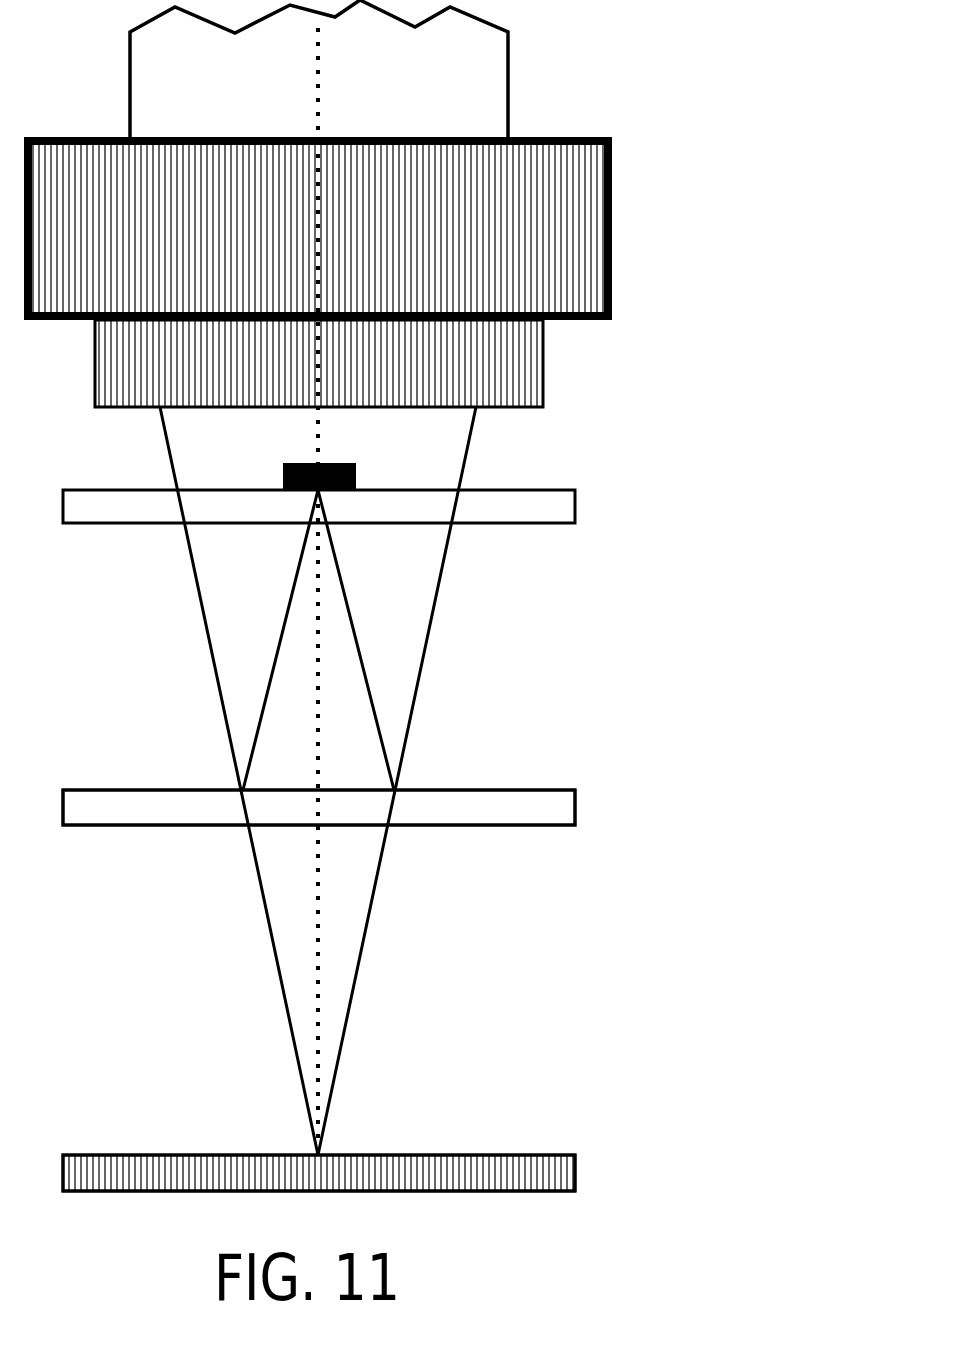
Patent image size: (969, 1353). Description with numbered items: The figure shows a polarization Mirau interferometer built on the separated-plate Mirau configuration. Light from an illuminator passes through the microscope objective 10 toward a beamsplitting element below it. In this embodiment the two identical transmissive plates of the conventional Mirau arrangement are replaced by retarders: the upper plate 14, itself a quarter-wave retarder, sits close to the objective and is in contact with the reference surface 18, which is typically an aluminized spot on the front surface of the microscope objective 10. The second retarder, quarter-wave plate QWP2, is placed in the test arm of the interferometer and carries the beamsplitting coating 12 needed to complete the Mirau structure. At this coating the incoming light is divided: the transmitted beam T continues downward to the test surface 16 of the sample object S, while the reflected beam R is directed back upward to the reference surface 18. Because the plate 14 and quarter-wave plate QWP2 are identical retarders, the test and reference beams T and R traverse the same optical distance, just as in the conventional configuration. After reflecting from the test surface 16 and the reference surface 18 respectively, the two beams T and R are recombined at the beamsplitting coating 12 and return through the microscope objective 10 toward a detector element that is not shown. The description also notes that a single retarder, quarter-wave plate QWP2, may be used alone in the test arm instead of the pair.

The microscope objective 10 is at (507, 358).
The beamsplitting coating 12 is at (463, 790).
The transmissive plate 14 is at (553, 508).
The test surface 16 is at (445, 1155).
The reference surface 18 is at (297, 492).
The reflected beam R is at (345, 590).
The transmitted beam T is at (355, 990).
The sample object S is at (575, 1170).
The quarter-wave plate QWP2 is at (575, 808).